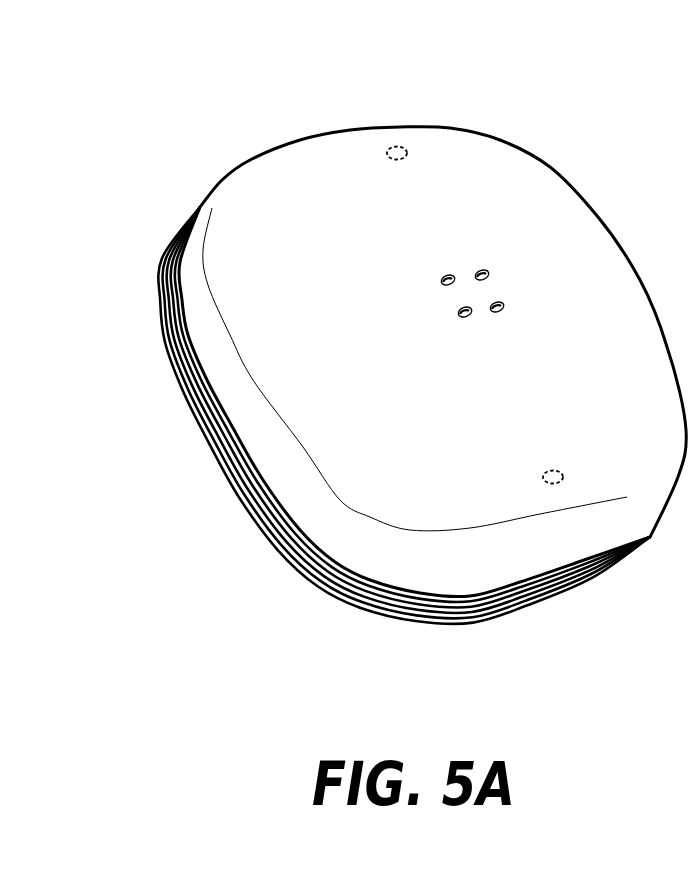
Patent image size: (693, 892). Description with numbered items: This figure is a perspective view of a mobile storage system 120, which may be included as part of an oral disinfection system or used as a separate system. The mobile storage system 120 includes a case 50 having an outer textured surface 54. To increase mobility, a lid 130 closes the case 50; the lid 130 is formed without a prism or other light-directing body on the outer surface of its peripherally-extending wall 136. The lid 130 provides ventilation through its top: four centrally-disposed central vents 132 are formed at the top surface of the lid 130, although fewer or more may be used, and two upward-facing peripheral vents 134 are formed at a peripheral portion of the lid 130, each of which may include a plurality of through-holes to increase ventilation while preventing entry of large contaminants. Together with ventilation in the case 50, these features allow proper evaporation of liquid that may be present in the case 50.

The case 50 is at (394, 349).
The outer textured surface 54 is at (220, 463).
The mobile storage system 120 is at (394, 338).
The lid 130 is at (222, 290).
The central vents 132 is at (491, 247).
The peripheral vents 134 is at (402, 146).
The peripherally-extending wall 136 is at (218, 392).